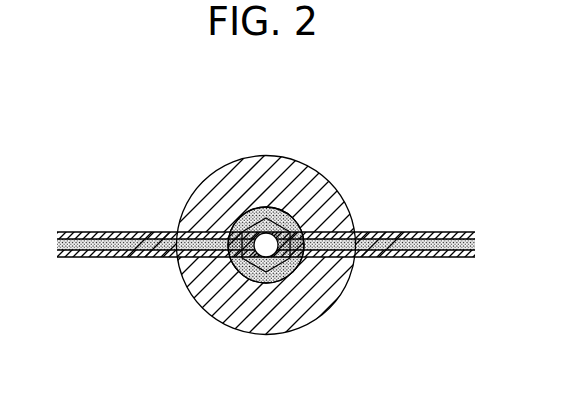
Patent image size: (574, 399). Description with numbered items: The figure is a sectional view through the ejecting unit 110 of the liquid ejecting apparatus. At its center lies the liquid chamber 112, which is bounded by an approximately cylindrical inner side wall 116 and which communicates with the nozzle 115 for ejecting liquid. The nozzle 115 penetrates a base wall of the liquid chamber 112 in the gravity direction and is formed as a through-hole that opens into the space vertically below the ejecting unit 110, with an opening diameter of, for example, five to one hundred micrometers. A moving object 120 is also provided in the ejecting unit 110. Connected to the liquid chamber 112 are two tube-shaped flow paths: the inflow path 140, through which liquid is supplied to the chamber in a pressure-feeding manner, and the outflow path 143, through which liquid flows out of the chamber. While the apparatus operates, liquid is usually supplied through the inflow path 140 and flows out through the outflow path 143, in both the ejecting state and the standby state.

The ejecting unit 110 is at (326, 176).
The liquid chamber 112 is at (276, 254).
The nozzle 115 is at (270, 272).
The inner side wall 116 is at (252, 207).
The moving object 120 is at (243, 287).
The inflow path 140 is at (425, 258).
The outflow path 143 is at (108, 258).